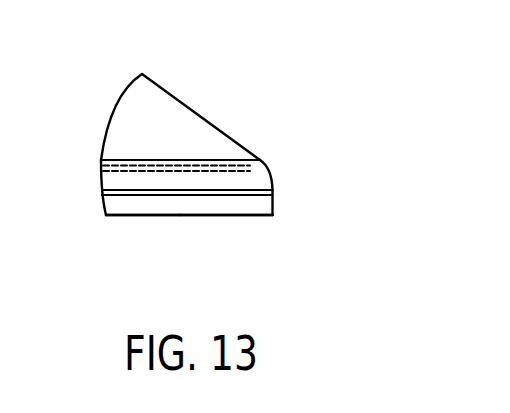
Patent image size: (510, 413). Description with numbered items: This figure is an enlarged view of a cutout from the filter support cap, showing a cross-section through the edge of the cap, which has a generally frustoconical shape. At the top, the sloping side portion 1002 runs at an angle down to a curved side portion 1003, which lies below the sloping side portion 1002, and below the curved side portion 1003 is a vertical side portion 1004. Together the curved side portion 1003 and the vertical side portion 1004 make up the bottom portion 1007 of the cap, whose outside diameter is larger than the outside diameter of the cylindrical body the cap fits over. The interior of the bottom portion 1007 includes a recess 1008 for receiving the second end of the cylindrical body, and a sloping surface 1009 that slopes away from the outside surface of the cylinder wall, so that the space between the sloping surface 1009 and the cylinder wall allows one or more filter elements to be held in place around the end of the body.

The sloping side portion 1002 is at (170, 93).
The curved side portion 1003 is at (262, 158).
The vertical side portion 1004 is at (272, 198).
The bottom portion 1007 is at (92, 165).
The recess 1008 is at (136, 199).
The sloping surface 1009 is at (243, 202).